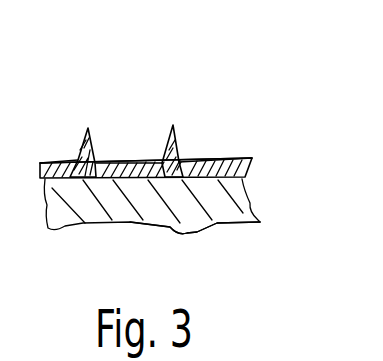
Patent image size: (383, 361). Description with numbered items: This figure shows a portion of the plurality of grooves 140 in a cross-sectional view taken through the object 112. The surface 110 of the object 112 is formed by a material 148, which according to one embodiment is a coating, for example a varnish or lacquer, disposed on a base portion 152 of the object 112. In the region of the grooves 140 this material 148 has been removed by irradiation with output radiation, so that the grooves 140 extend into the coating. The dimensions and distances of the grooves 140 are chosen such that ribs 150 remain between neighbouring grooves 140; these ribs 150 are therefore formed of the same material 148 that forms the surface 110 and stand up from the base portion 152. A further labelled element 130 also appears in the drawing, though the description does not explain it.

The surface 110 is at (223, 160).
The object 112 is at (123, 212).
The protrusion 130 is at (180, 128).
The grooves 140 is at (57, 147).
The material 148 is at (250, 163).
The ribs 150 is at (88, 128).
The base portion 152 is at (212, 220).